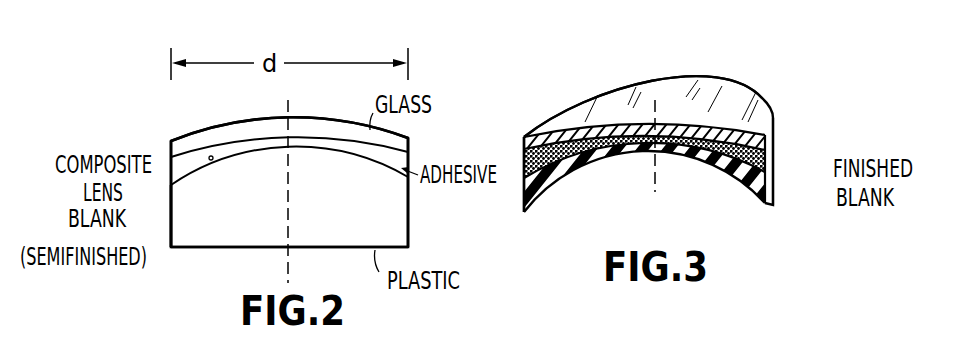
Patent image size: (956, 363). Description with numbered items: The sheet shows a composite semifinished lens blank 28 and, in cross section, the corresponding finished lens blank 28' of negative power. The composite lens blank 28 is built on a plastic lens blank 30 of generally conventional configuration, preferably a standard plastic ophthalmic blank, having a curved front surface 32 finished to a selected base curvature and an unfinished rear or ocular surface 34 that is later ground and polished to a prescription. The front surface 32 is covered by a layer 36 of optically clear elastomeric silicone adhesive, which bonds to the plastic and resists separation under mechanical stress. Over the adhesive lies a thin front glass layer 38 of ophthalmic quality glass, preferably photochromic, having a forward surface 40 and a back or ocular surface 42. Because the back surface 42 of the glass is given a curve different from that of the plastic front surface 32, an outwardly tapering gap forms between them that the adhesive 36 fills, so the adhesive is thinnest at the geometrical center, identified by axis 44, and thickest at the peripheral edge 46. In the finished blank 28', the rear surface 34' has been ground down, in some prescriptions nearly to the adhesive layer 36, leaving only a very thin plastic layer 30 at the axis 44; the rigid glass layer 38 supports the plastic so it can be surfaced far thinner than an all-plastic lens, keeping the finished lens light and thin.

In FIG. 2, the composite lens blank 28 is at (252, 152).
In FIG. 3, the finished lens blank 28' is at (622, 107).
In FIG. 2, the plastic lens blank 30 is at (192, 232).
In FIG. 3, the plastic lens blank 30 is at (763, 199).
In FIG. 2, the front surface 32 is at (212, 160).
In FIG. 2, the rear surface 34 is at (289, 269).
In FIG. 3, the finished rear surface 34' is at (644, 187).
In FIG. 2, the adhesive layer 36 is at (406, 157).
In FIG. 3, the adhesive layer 36 is at (770, 168).
In FIG. 2, the glass layer 38 is at (242, 132).
In FIG. 3, the glass layer 38 is at (773, 141).
In FIG. 2, the forward surface 40 is at (325, 118).
In FIG. 3, the forward surface 40 is at (698, 92).
In FIG. 2, the back surface 42 is at (196, 151).
In FIG. 3, the back surface 42 is at (523, 162).
In FIG. 2, the axis 44 is at (289, 220).
In FIG. 3, the axis 44 is at (656, 168).
In FIG. 2, the peripheral edge 46 is at (408, 212).
In FIG. 3, the peripheral edge 46 is at (773, 120).